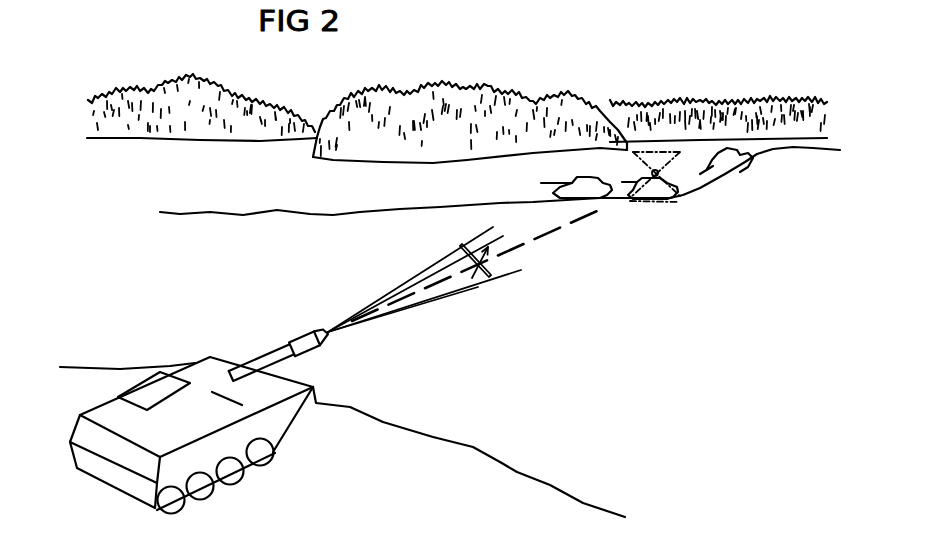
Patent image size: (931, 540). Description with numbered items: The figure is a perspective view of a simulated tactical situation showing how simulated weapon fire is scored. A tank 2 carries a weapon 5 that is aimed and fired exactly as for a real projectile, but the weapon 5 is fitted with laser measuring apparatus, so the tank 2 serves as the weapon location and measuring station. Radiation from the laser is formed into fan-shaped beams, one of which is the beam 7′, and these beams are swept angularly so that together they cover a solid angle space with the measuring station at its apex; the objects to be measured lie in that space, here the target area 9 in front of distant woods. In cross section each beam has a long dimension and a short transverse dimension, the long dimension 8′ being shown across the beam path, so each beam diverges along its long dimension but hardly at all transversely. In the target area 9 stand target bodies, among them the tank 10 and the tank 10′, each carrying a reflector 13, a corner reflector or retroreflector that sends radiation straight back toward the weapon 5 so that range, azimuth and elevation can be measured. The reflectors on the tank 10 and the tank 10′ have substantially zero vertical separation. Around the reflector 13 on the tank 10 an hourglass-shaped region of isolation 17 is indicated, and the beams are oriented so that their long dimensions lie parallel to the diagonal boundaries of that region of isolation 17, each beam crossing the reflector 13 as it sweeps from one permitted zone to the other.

The tank 2 is at (222, 445).
The weapon 5 is at (277, 350).
The fan-shaped beam 7′ is at (412, 272).
The beam cross section long dimension 8′ is at (470, 242).
The target area 9 is at (550, 170).
The target body 10 is at (654, 190).
The target body 10′ is at (590, 190).
The reflector 13 is at (658, 170).
The region of isolation 17 is at (662, 200).